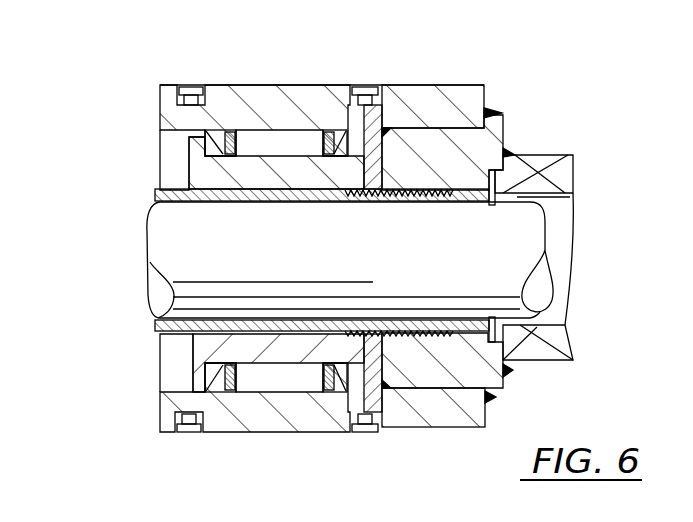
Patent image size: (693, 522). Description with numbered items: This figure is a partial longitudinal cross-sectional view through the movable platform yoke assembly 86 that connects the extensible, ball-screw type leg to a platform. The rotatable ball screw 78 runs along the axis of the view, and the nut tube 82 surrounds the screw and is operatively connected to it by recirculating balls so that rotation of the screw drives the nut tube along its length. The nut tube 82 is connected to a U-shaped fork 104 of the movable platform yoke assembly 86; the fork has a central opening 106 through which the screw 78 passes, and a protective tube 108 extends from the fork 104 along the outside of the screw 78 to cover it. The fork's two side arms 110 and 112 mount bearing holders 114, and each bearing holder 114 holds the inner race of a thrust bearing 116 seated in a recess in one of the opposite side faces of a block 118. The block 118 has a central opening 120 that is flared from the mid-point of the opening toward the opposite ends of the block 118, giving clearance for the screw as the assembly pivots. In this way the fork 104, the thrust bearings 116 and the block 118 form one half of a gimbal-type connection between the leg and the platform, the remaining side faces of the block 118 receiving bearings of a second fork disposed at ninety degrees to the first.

The ball screw 78 is at (530, 247).
The nut tube 82 is at (565, 171).
The movable platform yoke assembly 86 is at (297, 78).
The U-shaped fork 104 is at (503, 124).
The central opening 106 is at (513, 196).
The protective tube 108 is at (180, 198).
The side arm 110 is at (458, 62).
The side arm 112 is at (438, 420).
The bearing holder 114 is at (254, 92).
The thrust bearing 116 is at (334, 145).
The block 118 is at (200, 172).
The central opening 120 is at (294, 204).